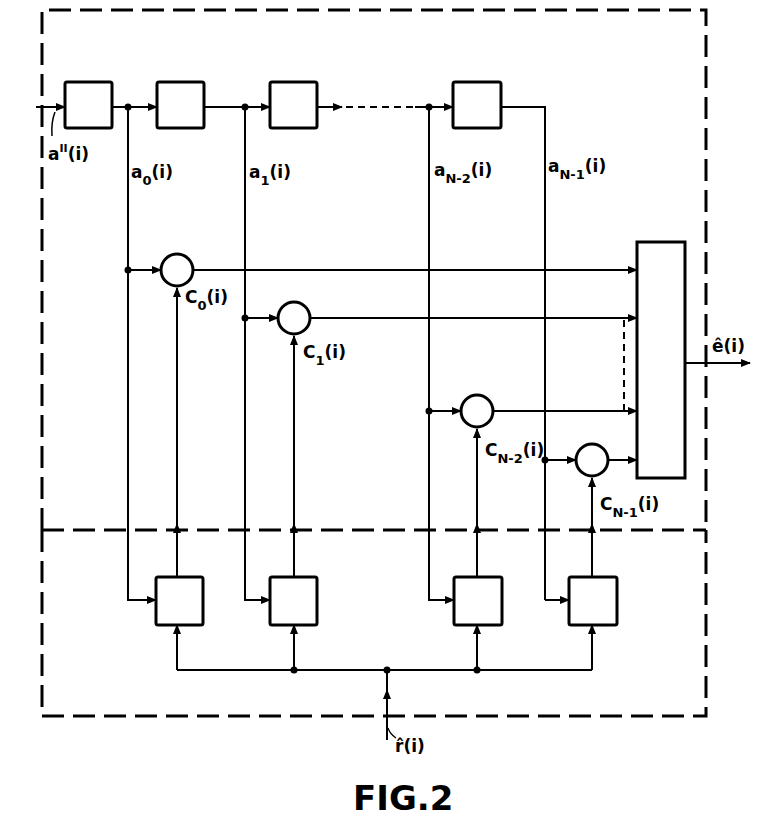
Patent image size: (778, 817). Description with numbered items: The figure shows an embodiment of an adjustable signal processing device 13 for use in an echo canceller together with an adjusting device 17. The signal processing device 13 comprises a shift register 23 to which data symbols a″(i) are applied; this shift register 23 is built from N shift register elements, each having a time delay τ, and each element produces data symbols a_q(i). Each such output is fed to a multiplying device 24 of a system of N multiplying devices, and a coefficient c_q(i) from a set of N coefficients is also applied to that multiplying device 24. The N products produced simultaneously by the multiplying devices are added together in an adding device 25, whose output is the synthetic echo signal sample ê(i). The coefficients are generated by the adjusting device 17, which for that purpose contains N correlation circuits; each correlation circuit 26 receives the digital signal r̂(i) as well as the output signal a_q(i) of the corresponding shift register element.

The signal processing device 13 is at (708, 490).
The adjusting device 17 is at (708, 552).
The shift register 23 is at (393, 42).
The multiplying device 24 is at (192, 250).
The adding device 25 is at (641, 244).
The correlation circuit 26 is at (205, 628).